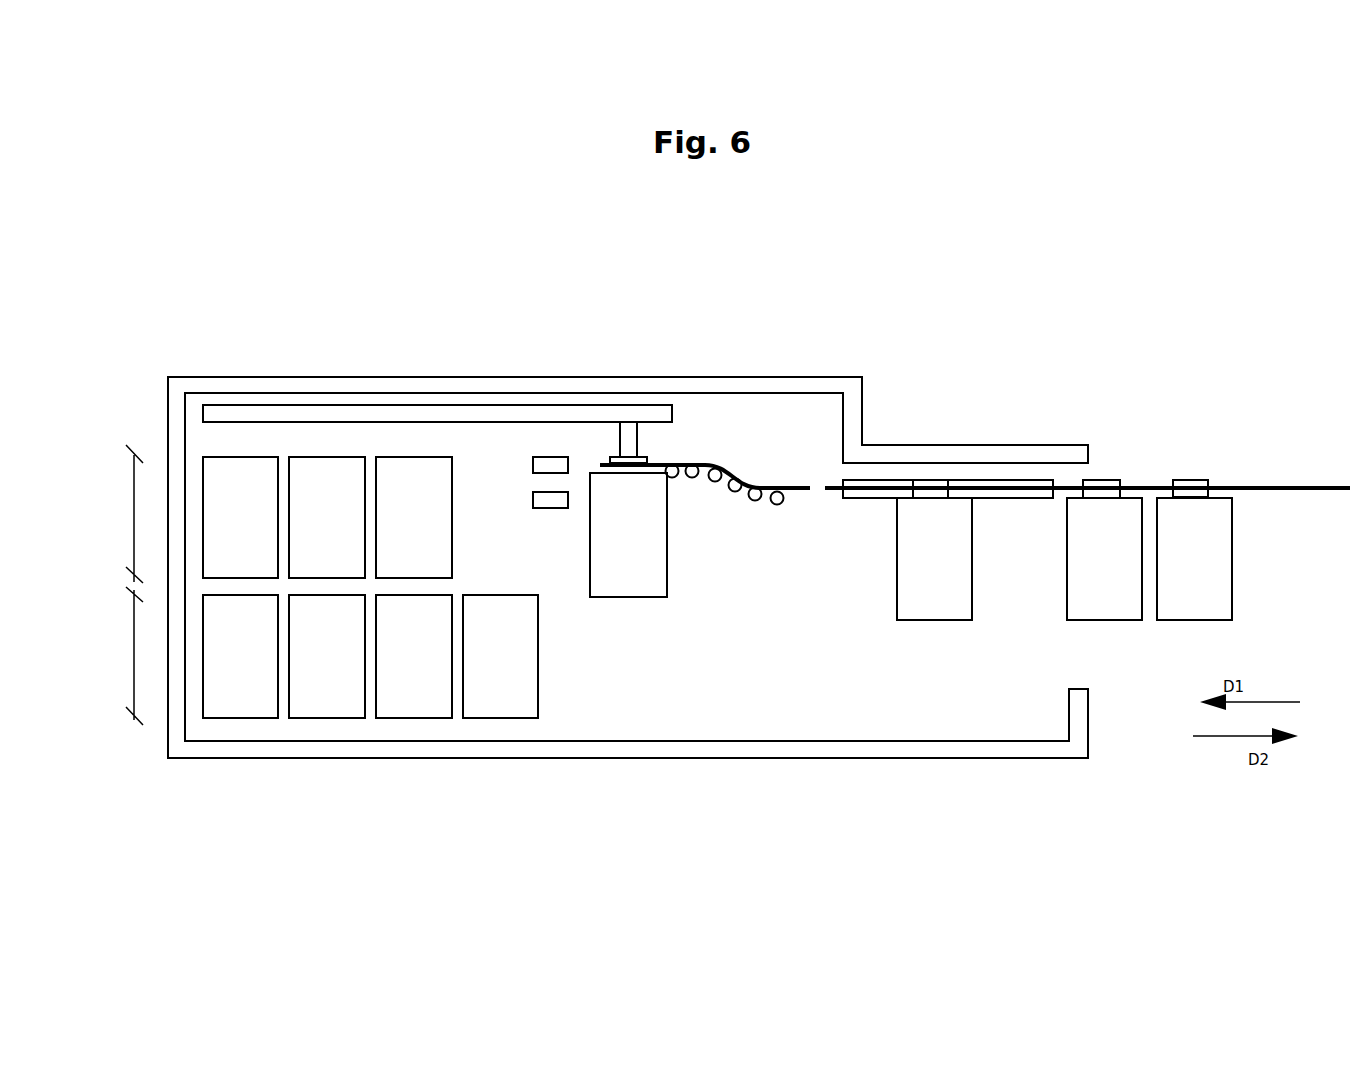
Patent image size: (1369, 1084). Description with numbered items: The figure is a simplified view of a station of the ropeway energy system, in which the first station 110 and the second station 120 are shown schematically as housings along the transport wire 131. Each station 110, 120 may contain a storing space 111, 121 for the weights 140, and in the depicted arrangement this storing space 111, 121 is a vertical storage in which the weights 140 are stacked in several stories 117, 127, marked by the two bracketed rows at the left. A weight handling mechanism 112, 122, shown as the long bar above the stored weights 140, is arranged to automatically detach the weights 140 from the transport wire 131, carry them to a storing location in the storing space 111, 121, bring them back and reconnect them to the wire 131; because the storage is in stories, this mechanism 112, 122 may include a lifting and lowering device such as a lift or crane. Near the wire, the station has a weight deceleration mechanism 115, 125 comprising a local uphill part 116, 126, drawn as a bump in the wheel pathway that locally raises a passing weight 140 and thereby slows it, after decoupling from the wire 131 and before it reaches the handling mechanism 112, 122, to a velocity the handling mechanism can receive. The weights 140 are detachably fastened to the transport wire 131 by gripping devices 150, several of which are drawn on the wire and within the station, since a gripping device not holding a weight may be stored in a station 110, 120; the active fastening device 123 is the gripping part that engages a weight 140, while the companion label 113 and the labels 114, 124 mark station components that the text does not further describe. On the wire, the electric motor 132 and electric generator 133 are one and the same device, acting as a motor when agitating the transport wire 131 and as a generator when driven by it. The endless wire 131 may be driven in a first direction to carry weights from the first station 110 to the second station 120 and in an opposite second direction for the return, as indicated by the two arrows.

The first station 110 is at (628, 485).
The second station 120 is at (480, 370).
The storing space 111 is at (487, 544).
The storing space 121 is at (502, 565).
The weight handling mechanism 112 is at (437, 331).
The weight handling mechanism 122 is at (358, 405).
The support post of first unit 113 is at (587, 377).
The active fastening device 123 is at (615, 457).
The top wall of first unit 114 is at (437, 331).
The top wall of second unit 124 is at (238, 405).
The weight deceleration mechanism 115 is at (732, 547).
The weight deceleration mechanism 125 is at (740, 517).
The local uphill part 116 is at (705, 419).
The local uphill part 126 is at (702, 457).
The stories 117 is at (97, 585).
The stories 127 is at (97, 585).
The transport wire 131 is at (1235, 485).
The electric motor 132 is at (961, 466).
The electric generator 133 is at (948, 480).
The weights 140 is at (240, 718).
The gripping devices 150 is at (548, 508).